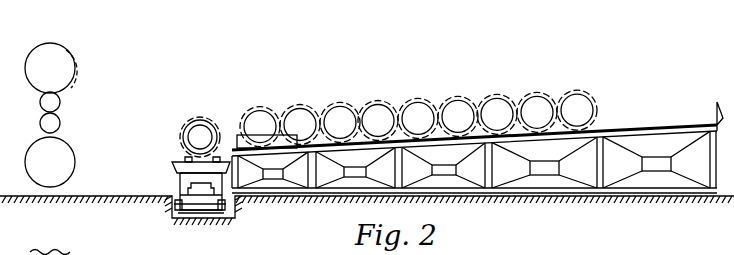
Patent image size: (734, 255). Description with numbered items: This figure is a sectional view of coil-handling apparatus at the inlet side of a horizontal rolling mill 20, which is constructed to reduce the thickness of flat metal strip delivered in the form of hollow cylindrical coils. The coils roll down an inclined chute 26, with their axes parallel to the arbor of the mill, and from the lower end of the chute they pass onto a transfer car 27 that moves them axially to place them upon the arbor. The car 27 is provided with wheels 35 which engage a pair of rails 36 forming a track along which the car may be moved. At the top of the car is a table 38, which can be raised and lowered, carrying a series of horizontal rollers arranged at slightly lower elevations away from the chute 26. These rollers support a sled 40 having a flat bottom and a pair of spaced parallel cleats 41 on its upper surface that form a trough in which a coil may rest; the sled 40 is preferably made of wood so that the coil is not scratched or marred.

The horizontal rolling mill 20 is at (63, 123).
The inclined chute 26 is at (626, 129).
The transfer car 27 is at (183, 186).
The wheels 35 is at (173, 203).
The rails 36 is at (218, 213).
The table 38 is at (181, 170).
The sled 40 is at (177, 162).
The cleats 41 is at (190, 126).